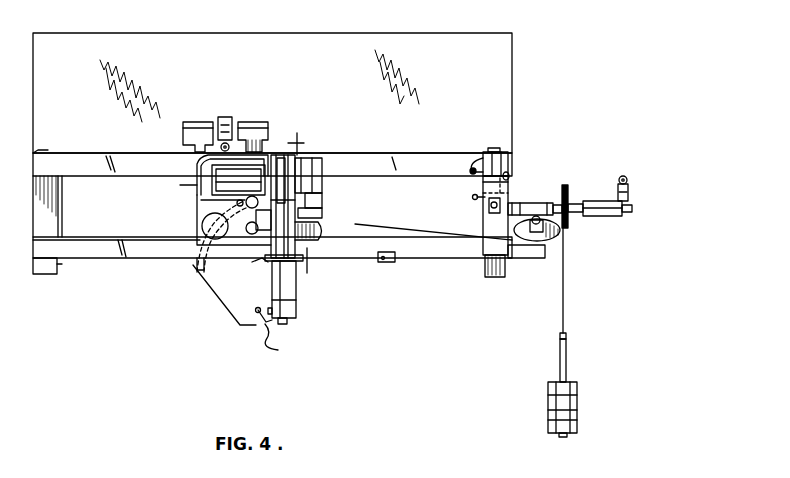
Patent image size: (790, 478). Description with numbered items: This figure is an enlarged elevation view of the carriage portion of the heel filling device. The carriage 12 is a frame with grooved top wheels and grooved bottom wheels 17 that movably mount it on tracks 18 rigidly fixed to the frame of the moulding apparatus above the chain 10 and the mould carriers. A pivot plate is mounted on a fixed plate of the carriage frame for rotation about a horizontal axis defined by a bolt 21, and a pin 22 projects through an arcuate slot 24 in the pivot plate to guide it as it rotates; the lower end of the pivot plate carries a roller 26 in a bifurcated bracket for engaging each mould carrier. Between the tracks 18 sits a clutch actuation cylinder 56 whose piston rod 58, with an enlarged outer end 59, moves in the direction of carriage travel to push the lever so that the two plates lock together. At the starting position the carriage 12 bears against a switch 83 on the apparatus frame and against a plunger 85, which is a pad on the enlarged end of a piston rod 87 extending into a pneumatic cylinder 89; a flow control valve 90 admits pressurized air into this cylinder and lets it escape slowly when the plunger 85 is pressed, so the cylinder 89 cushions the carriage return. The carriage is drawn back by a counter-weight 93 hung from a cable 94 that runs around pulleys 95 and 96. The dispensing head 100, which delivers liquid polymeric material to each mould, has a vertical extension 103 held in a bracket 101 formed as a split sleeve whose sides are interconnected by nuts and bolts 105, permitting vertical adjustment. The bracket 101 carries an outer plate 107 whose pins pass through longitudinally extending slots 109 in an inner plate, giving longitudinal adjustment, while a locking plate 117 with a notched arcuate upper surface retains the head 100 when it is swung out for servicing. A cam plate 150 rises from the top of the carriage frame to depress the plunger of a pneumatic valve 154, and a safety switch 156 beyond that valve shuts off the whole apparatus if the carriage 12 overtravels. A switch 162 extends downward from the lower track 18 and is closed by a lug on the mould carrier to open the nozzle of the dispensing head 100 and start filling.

The chain 10 is at (310, 201).
The carriage 12 is at (200, 205).
The bottom wheels 17 is at (202, 222).
The tracks 18 is at (379, 173).
The bolt 21 is at (258, 262).
The pin 22 is at (237, 202).
The arcuate slot 24 is at (196, 266).
The roller 26 is at (278, 335).
The clutch actuation cylinder 56 is at (506, 176).
The piston rod 58 is at (486, 205).
The enlarged outer end 59 is at (472, 197).
The switch 83 is at (474, 160).
The plunger 85 is at (488, 205).
The piston rod 87 is at (495, 258).
The pneumatic cylinder 89 is at (526, 205).
The flow control valve 90 is at (626, 175).
The counter-weight 93 is at (555, 405).
The cable 94 is at (566, 318).
The pulley 95 is at (569, 194).
The pulley 96 is at (562, 245).
The dispensing head 100 is at (290, 292).
The bracket 101 is at (300, 174).
The vertical extension 103 is at (306, 230).
The nuts and bolts 105 is at (280, 158).
The outer plate 107 is at (236, 178).
The longitudinally extending slots 109 is at (262, 167).
The locking plate 117 is at (318, 213).
The cam plate 150 is at (198, 166).
The pneumatic valve 154 is at (225, 115).
The safety switch 156 is at (193, 130).
The switch 162 is at (390, 263).